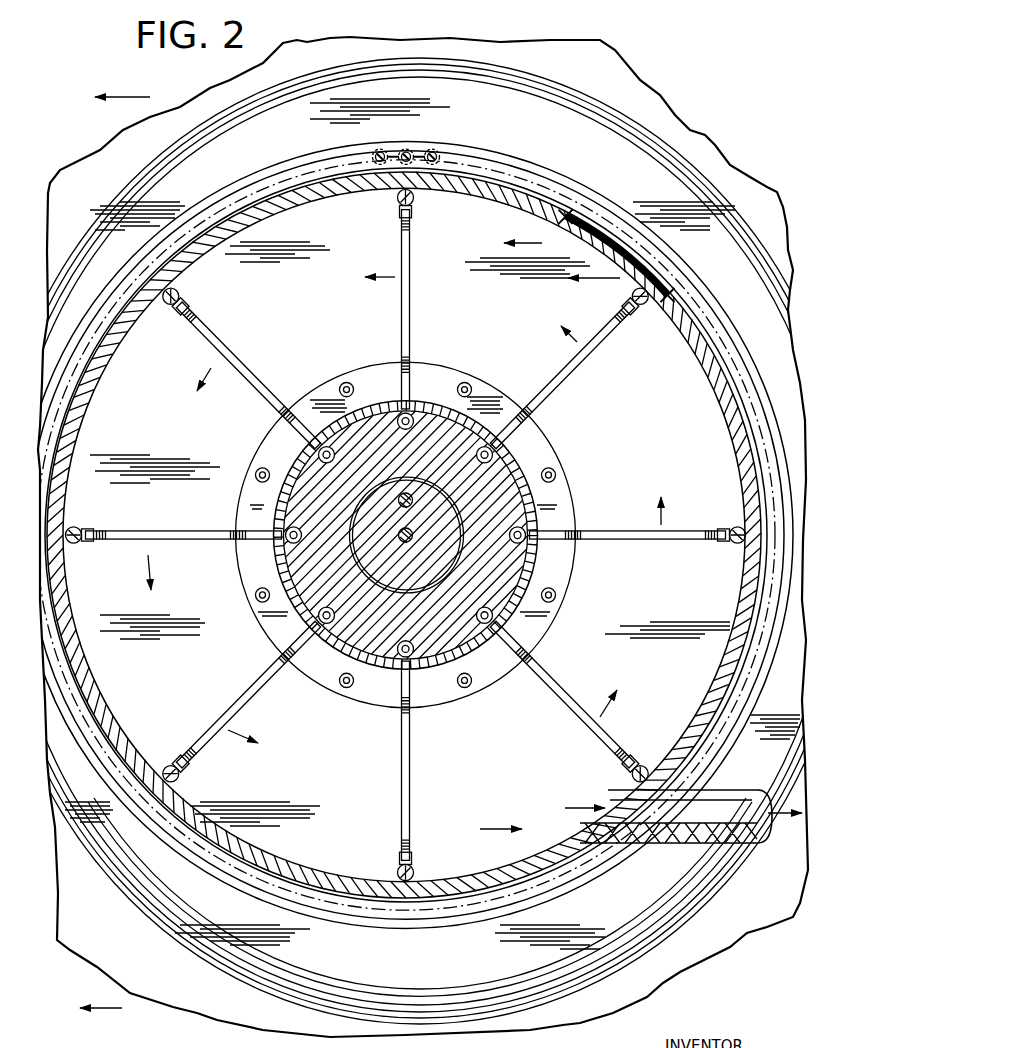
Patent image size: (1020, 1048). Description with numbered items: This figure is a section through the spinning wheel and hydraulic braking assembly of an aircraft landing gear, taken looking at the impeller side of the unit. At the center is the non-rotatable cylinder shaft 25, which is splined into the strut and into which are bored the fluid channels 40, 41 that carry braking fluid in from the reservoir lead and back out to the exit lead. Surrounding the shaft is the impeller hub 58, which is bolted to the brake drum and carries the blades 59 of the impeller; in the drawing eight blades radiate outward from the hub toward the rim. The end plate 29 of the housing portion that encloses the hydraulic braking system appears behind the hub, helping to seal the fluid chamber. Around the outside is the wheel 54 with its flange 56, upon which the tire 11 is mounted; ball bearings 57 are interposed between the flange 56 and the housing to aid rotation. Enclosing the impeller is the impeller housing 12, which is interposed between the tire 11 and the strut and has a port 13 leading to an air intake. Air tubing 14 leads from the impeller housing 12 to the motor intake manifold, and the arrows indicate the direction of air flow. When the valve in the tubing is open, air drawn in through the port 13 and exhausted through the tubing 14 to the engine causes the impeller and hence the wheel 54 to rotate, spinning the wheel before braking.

The tire 11 is at (632, 103).
The impeller housing 12 is at (218, 213).
The port 13 is at (617, 232).
The air tubing 14 is at (728, 803).
The cylinder shaft 25 is at (443, 566).
The end plate 29 is at (321, 332).
The channel 40 is at (399, 505).
The channel 41 is at (399, 539).
The wheel 54 is at (650, 147).
The flange 56 is at (580, 153).
The ball bearings 57 is at (428, 150).
The impeller hub 58 is at (443, 462).
The blades 59 is at (413, 322).